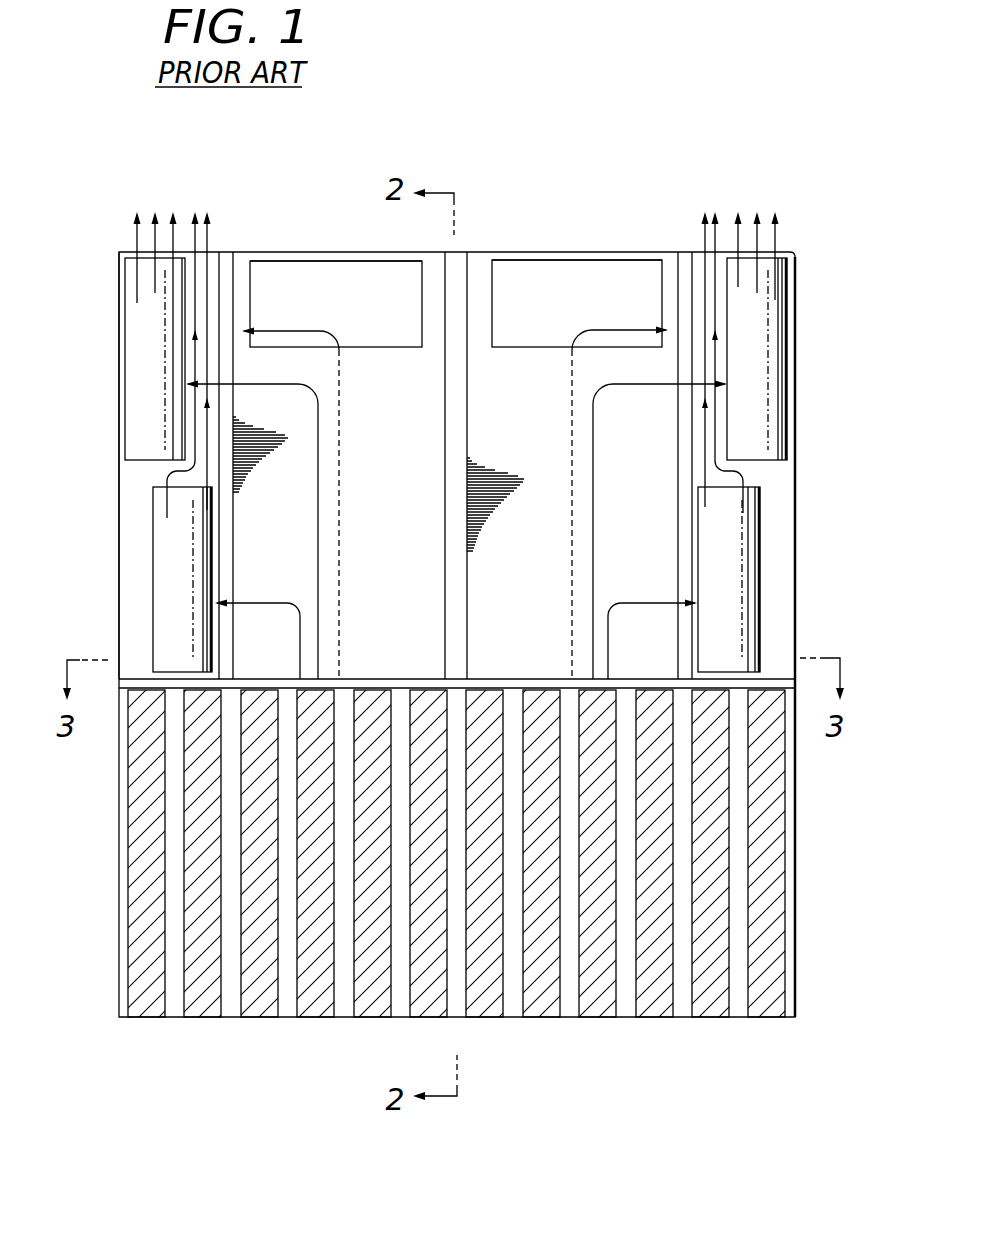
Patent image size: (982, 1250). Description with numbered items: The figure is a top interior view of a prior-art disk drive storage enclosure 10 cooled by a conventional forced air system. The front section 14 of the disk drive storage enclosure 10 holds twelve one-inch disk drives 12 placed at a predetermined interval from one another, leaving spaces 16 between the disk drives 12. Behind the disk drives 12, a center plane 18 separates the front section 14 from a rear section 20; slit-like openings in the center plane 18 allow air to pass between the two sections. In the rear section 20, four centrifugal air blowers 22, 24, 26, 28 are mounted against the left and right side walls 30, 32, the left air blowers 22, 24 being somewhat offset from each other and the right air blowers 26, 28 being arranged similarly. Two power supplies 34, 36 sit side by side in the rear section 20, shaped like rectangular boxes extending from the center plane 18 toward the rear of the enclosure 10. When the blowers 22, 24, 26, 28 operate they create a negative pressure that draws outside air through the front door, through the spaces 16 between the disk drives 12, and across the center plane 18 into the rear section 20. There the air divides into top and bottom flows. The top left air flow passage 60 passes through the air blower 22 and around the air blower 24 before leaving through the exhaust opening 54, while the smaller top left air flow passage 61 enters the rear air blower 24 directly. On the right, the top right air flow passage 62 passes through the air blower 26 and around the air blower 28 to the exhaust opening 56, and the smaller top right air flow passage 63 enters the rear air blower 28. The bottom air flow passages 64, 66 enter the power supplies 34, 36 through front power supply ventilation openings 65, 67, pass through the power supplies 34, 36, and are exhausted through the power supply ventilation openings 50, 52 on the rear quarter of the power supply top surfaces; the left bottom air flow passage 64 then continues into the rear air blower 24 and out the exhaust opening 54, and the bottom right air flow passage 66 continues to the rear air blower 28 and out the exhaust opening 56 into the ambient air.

The disk drive storage enclosure 10 is at (806, 581).
The disk drives 12 is at (135, 948).
The front section 14 is at (797, 820).
The spaces between the disk drives 16 is at (175, 860).
The center plane 18 is at (130, 685).
The rear section 20 is at (797, 477).
The left front centrifugal air blower 22 is at (165, 577).
The left rear centrifugal air blower 24 is at (135, 372).
The right front centrifugal air blower 26 is at (722, 577).
The right rear centrifugal air blower 28 is at (777, 368).
The left side wall 30 is at (119, 518).
The right side wall 32 is at (797, 440).
The left power supply 34 is at (313, 255).
The right power supply 36 is at (510, 256).
The rear power supply ventilation opening 50 is at (292, 261).
The power supply ventilation opening 52 is at (568, 260).
The exhaust opening 54 is at (214, 252).
The exhaust opening 56 is at (783, 250).
The top left air flow passage 60 is at (298, 637).
The top left air flow passage 61 is at (317, 465).
The top right air flow passage 62 is at (612, 632).
The top right air flow passage 63 is at (598, 465).
The left bottom air flow passage 64 is at (287, 331).
The front power supply ventilation opening 65 is at (367, 678).
The bottom right air flow passage 66 is at (623, 330).
The front power supply ventilation opening 67 is at (520, 678).